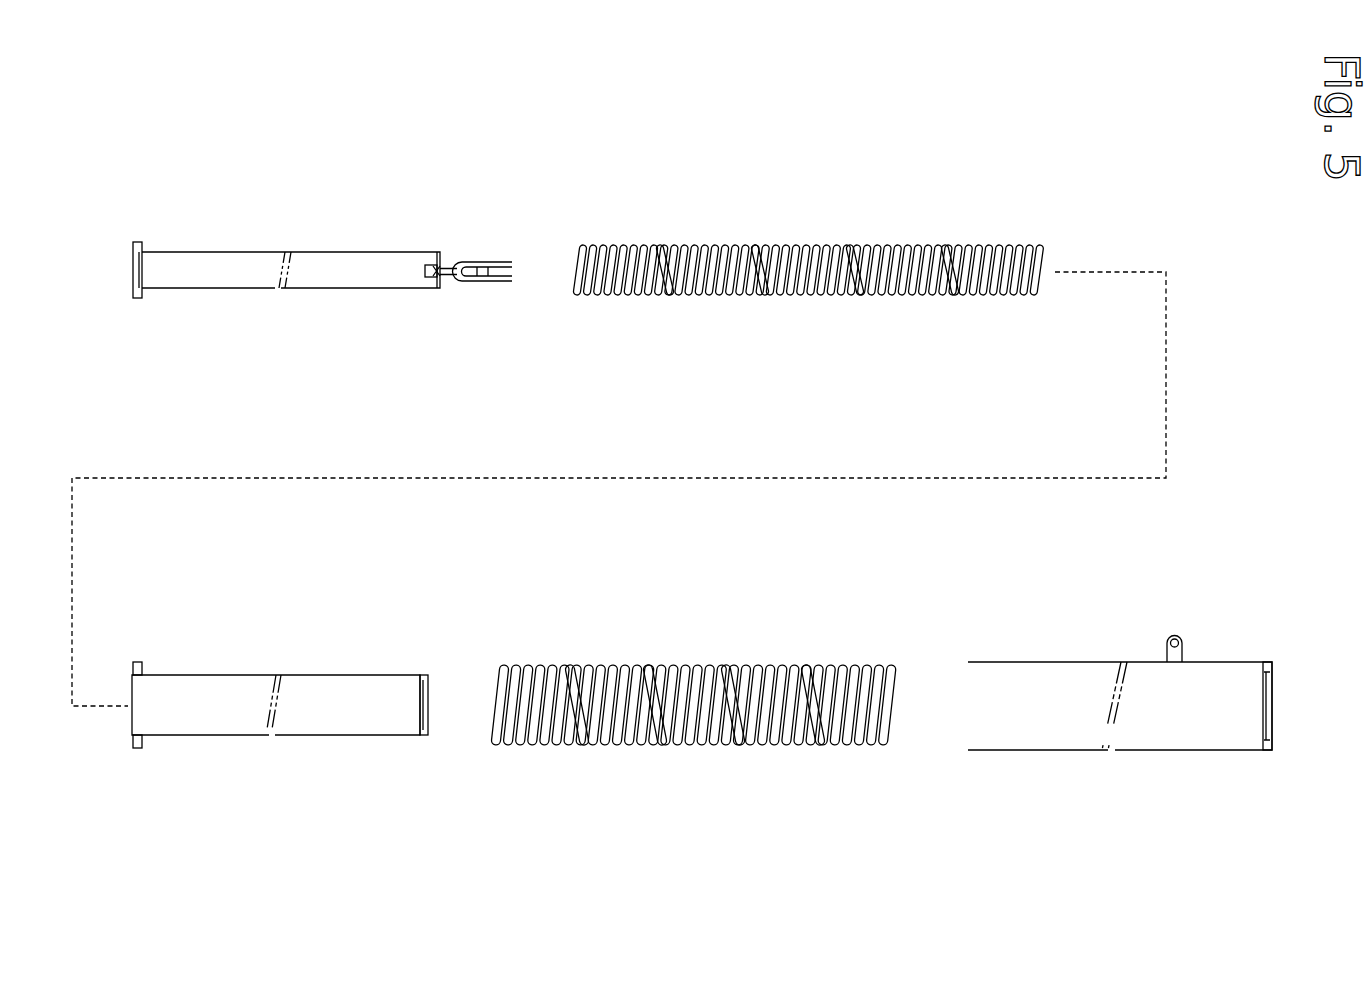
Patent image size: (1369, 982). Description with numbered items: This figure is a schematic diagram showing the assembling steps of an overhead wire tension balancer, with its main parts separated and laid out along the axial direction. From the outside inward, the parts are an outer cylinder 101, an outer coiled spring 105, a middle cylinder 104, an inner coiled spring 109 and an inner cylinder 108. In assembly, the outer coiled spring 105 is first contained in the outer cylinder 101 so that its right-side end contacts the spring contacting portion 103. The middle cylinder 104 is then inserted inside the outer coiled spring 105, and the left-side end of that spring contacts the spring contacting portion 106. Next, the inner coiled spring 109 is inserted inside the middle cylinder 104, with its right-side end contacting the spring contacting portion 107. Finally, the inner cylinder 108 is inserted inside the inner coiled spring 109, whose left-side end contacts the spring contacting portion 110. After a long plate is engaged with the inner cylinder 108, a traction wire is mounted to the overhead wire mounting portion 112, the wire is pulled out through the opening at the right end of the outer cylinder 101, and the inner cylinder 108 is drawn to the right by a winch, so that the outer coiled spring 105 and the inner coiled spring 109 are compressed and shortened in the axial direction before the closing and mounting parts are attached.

The outer cylinder 101 is at (1173, 752).
The spring contacting portion 103 is at (1267, 662).
The middle cylinder 104 is at (347, 737).
The outer coiled spring 105 is at (610, 747).
The spring contacting portion 106 is at (138, 662).
The spring contacting portion 107 is at (426, 675).
The inner cylinder 108 is at (383, 290).
The inner coiled spring 109 is at (962, 297).
The spring contacting portion 110 is at (138, 241).
The overhead wire mounting portion 112 is at (482, 249).